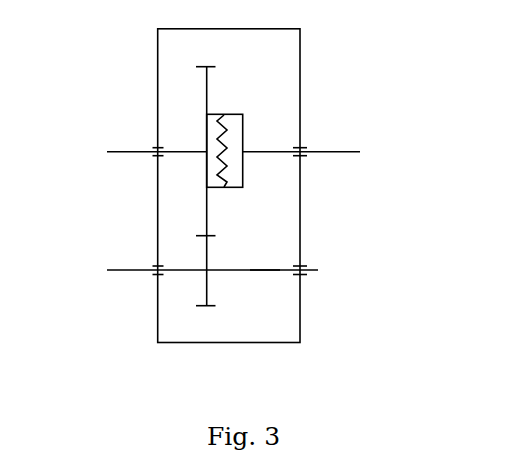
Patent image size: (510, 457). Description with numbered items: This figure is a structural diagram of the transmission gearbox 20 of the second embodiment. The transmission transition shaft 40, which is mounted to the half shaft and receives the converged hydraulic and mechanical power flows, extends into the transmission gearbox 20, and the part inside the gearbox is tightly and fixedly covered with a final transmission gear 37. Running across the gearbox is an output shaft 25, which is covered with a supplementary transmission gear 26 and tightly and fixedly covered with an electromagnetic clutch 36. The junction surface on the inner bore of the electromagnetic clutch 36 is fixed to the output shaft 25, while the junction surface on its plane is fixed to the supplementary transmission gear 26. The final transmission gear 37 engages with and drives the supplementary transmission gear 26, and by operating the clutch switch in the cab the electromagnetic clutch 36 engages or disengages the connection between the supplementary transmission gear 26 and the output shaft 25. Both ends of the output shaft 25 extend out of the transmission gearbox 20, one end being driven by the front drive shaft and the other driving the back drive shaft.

The transmission gearbox 20 is at (267, 113).
The output shaft 25 is at (130, 152).
The supplementary transmission gear 26 is at (207, 198).
The electromagnetic clutch 36 is at (232, 162).
The final transmission gear 37 is at (206, 284).
The transmission transition shaft 40 is at (264, 270).